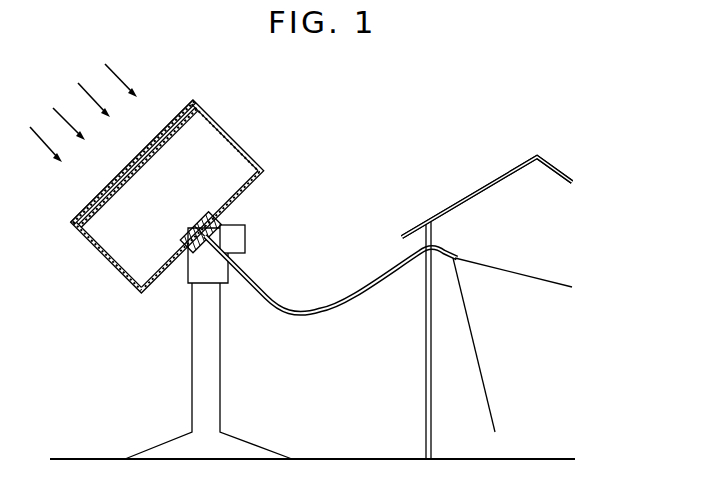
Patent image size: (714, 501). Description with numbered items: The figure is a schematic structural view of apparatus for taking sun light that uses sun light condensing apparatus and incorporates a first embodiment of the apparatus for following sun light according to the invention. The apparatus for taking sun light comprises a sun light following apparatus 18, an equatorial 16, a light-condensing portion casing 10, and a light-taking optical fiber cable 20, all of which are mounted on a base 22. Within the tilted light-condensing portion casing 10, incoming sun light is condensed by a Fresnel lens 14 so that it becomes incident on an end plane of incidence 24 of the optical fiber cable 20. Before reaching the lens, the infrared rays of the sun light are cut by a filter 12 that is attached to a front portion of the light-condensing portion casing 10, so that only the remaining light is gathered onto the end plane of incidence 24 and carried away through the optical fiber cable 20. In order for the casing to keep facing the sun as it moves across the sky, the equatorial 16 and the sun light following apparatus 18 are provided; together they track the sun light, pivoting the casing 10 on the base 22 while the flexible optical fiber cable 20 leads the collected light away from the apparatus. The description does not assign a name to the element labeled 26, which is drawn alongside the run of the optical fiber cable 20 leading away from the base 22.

The light-condensing portion casing 10 is at (246, 151).
The filter 12 is at (191, 110).
The Fresnel lens 14 is at (198, 126).
The equatorial 16 is at (222, 218).
The sun light following apparatus 18 is at (246, 240).
The light-taking optical fiber cable 20 is at (321, 312).
The base 22 is at (191, 380).
The end plane of incidence 24 is at (197, 226).
The conduit to building 26 is at (456, 257).